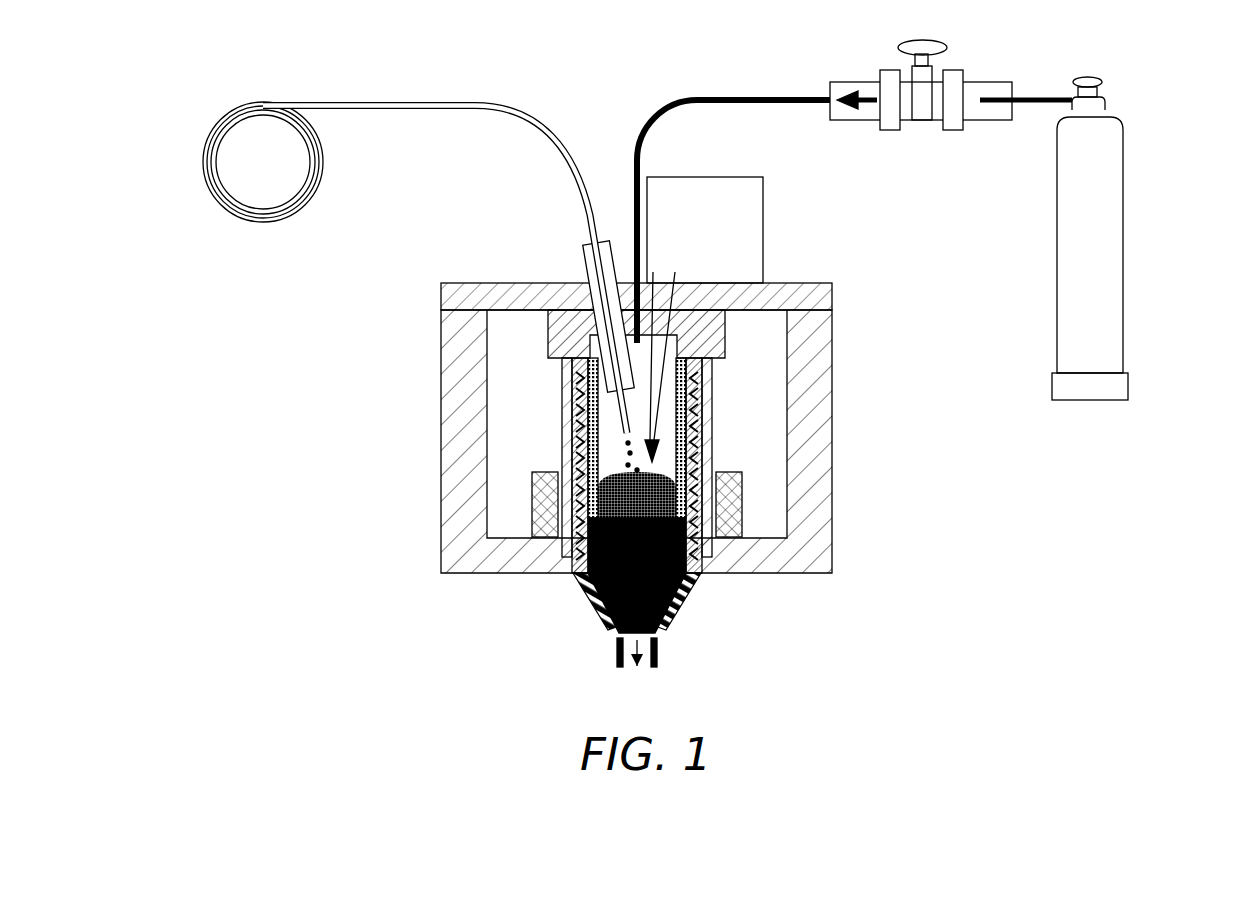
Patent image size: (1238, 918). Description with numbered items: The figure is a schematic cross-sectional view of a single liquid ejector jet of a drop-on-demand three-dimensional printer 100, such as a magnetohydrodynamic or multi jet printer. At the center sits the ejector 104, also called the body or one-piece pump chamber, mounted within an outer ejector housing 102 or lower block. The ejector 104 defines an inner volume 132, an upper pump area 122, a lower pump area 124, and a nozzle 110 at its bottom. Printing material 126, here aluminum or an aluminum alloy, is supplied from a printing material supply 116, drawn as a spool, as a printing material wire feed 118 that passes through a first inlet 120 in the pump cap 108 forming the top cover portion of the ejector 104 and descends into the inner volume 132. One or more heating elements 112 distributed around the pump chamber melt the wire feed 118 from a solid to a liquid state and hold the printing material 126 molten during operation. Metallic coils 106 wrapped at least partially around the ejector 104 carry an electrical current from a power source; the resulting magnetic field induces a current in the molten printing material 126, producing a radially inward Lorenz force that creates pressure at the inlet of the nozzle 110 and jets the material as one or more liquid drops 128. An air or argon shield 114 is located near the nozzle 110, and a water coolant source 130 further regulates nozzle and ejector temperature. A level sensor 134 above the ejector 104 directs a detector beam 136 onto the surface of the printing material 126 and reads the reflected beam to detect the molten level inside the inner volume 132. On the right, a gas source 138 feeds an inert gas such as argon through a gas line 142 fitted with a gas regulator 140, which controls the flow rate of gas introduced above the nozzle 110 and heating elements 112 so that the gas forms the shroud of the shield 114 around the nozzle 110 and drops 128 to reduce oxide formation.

The three-dimensional printer 100 is at (352, 58).
The outer ejector housing 102 is at (440, 372).
The ejector 104 is at (712, 430).
The metallic coils 106 is at (700, 400).
The pump cap 108 is at (725, 335).
The nozzle 110 is at (609, 672).
The heating elements 112 is at (597, 609).
The air or argon shield 114 is at (670, 650).
The printing material supply 116 is at (203, 152).
The printing material wire feed 118 is at (441, 100).
The first inlet 120 is at (584, 262).
The upper pump area 122 is at (629, 465).
The lower pump area 124 is at (572, 582).
The printing material 126 is at (595, 597).
The liquid drops 128 is at (632, 670).
The water coolant source 130 is at (524, 513).
The inner volume 132 is at (695, 517).
The level sensor 134 is at (704, 293).
The detector beam 136 is at (672, 300).
The gas source 138 is at (1125, 238).
The gas regulator 140 is at (972, 92).
The gas line 142 is at (657, 110).